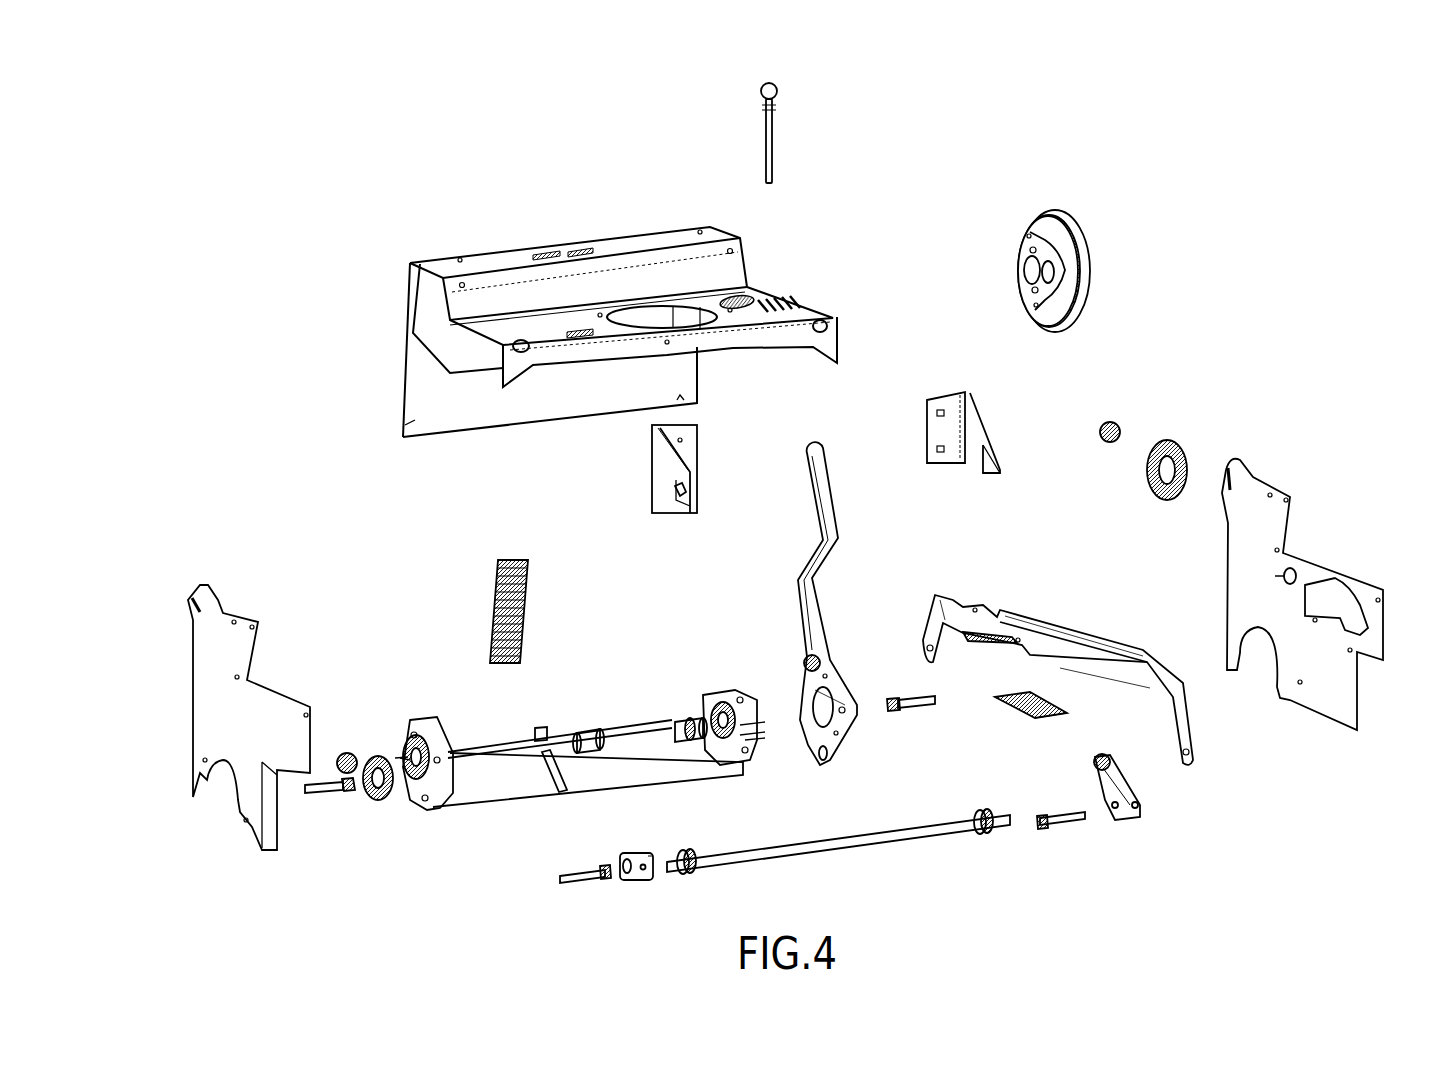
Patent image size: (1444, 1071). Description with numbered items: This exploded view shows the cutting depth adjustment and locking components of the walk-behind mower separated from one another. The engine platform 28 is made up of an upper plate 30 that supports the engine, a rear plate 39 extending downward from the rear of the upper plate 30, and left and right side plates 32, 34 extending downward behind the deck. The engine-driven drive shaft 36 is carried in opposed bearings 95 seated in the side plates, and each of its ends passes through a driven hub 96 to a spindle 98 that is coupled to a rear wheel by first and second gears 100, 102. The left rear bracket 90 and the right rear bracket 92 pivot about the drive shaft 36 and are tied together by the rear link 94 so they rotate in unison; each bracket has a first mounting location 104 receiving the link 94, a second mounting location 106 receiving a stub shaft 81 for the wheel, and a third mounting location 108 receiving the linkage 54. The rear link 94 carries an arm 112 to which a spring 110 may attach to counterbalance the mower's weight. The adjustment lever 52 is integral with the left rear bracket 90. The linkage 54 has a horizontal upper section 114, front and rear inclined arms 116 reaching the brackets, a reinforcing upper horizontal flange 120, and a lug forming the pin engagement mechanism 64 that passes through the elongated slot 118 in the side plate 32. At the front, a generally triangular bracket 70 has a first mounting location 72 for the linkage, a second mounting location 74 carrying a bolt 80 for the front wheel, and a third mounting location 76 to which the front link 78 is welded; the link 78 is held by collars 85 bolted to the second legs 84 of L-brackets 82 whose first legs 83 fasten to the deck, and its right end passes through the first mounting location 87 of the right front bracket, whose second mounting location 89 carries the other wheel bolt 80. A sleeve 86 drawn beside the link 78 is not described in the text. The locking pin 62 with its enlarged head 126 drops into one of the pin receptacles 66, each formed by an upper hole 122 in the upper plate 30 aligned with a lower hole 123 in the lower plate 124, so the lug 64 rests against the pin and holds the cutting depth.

The platform 28 is at (580, 317).
The upper plate 30 is at (497, 258).
The rear plate 39 is at (412, 416).
The pin receptacles 66 is at (762, 300).
The upper holes 122 is at (790, 305).
The locking pin 62 is at (810, 118).
The enlarged head 126 is at (785, 100).
The driven hub 96 is at (1088, 253).
The L-bracket 82 is at (648, 463).
The first leg 83 is at (688, 470).
The second leg 84 is at (670, 485).
The first gear 100 is at (1120, 430).
The second gear 102 is at (1180, 445).
The side plate 32 is at (1322, 594).
The elongated slot 118 is at (1345, 590).
The spring 110 is at (530, 580).
The side plate 34 is at (215, 700).
The stub shaft 81 is at (320, 800).
The bracket 92 is at (562, 727).
The bearings 95 is at (418, 735).
The spindle 98 is at (755, 710).
The drive shaft 36 is at (577, 707).
The arm 112 is at (542, 735).
The rear link 94 is at (660, 780).
The adjustment lever 52 is at (859, 633).
The bracket 90 is at (838, 745).
The second mounting location 106 is at (840, 690).
The third mounting location 108 is at (822, 660).
The first mounting location 104 is at (815, 768).
The linkage 54 is at (1071, 661).
The upper horizontal flange 120 is at (1047, 615).
The pin engagement mechanism 64 is at (1000, 627).
The inclined arms 116 is at (930, 605).
The upper section 114 is at (1112, 683).
The lower plate 124 is at (1009, 700).
The lower holes 123 is at (1015, 716).
The front link 78 is at (838, 853).
The collar 85 is at (685, 850).
The sleeve 86 is at (639, 884).
The second mounting location 89 is at (620, 858).
The first mounting location 87 is at (650, 878).
The bolt 80 is at (585, 887).
The second mounting location 74 is at (1097, 814).
The bracket 70 is at (1132, 772).
The first mounting location 72 is at (1090, 757).
The third mounting location 76 is at (1110, 815).